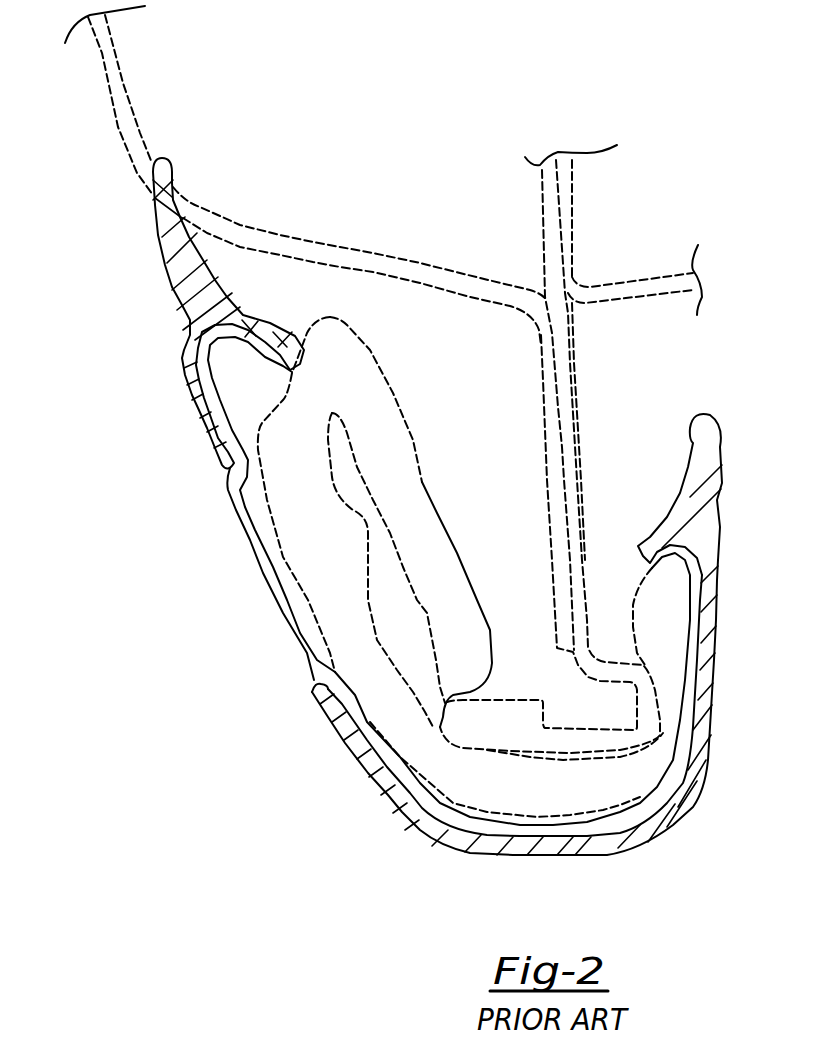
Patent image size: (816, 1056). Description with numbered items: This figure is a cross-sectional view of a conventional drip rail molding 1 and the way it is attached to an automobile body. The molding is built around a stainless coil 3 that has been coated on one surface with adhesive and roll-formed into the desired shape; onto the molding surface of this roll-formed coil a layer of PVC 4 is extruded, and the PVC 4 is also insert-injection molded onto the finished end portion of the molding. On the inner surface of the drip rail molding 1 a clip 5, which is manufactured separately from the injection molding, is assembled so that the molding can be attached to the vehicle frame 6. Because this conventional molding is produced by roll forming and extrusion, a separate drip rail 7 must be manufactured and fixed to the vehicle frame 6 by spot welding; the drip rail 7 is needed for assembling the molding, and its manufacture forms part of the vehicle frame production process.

The drip rail molding 1 is at (381, 788).
The stainless coil 3 is at (265, 568).
The PVC 4 is at (175, 263).
The clip 5 is at (283, 513).
The vehicle frame 6 is at (588, 290).
The drip rail 7 is at (548, 388).